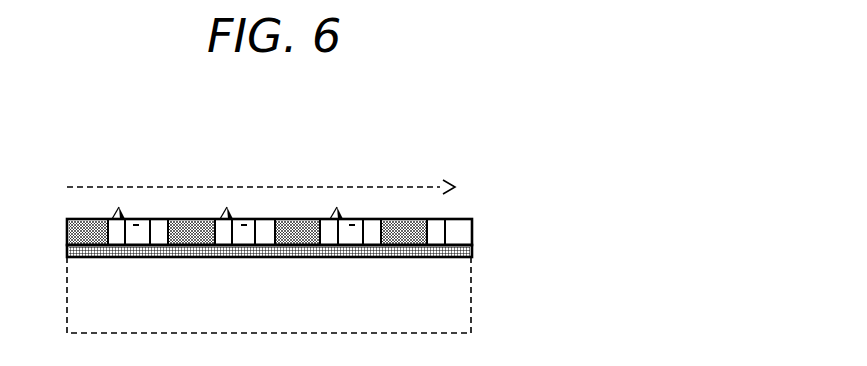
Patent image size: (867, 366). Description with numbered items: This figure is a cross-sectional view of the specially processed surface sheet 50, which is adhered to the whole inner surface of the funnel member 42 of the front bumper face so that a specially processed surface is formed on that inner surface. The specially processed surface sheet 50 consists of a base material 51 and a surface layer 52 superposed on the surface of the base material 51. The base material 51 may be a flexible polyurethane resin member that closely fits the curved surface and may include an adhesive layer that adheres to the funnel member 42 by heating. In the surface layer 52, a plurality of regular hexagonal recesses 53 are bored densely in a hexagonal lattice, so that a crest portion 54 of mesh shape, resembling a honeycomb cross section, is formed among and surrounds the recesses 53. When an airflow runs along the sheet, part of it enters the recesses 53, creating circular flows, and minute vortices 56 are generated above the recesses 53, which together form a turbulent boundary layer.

The funnel member 42 is at (458, 308).
The specially processed surface sheet 50 is at (491, 158).
The base material 51 is at (472, 250).
The surface layer 52 is at (465, 232).
The recess 53 is at (158, 220).
The crest portion 54 is at (85, 228).
The minute vortex 56 is at (148, 220).